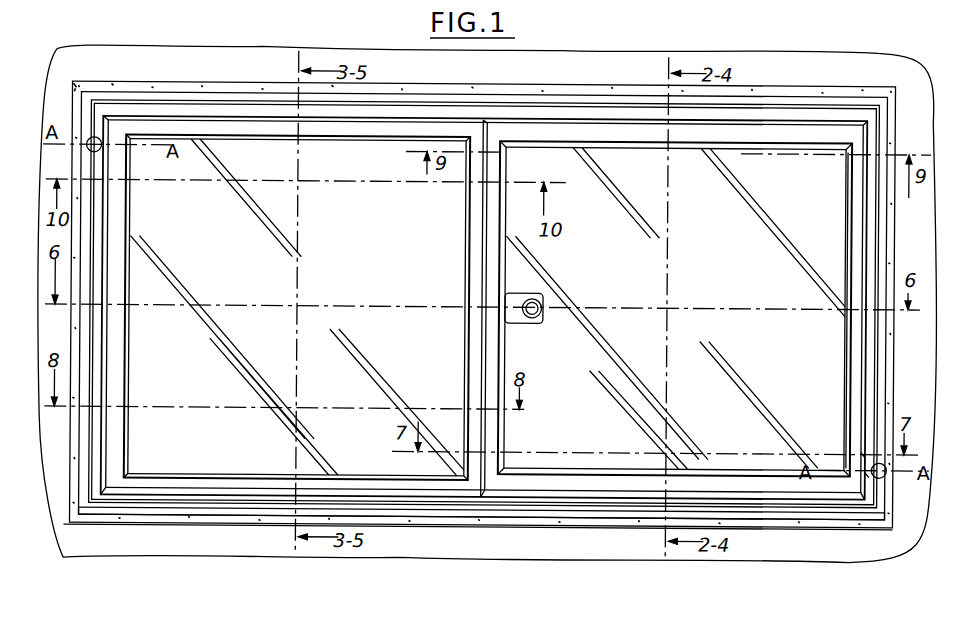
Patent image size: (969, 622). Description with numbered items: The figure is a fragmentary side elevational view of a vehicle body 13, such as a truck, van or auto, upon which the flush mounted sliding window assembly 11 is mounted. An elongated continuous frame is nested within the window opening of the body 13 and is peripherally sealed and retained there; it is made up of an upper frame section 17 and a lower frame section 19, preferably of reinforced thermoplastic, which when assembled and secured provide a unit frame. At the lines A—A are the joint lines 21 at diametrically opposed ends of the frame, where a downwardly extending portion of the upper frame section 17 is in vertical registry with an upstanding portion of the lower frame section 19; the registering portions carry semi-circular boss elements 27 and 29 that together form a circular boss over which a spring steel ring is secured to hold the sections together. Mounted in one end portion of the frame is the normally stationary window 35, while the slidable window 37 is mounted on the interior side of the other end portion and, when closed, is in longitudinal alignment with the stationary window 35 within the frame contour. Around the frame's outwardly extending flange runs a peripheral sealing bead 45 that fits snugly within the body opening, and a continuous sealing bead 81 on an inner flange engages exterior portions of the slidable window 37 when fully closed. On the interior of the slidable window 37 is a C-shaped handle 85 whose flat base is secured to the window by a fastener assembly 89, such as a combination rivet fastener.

The flush mounted sliding window assembly 11 is at (744, 48).
The vehicle body 13 is at (487, 293).
The upper frame section 17 is at (331, 131).
The lower frame section 19 is at (350, 484).
The joint line 21 is at (112, 158).
The semi-circular boss element 27 is at (878, 462).
The semi-circular boss element 29 is at (884, 480).
The stationary window 35 is at (351, 382).
The slidable window 37 is at (729, 384).
The peripheral sealing bead 45 is at (627, 94).
The continuous sealing bead 81 is at (849, 198).
The handle 85 is at (520, 294).
The fastener assembly 89 is at (540, 318).